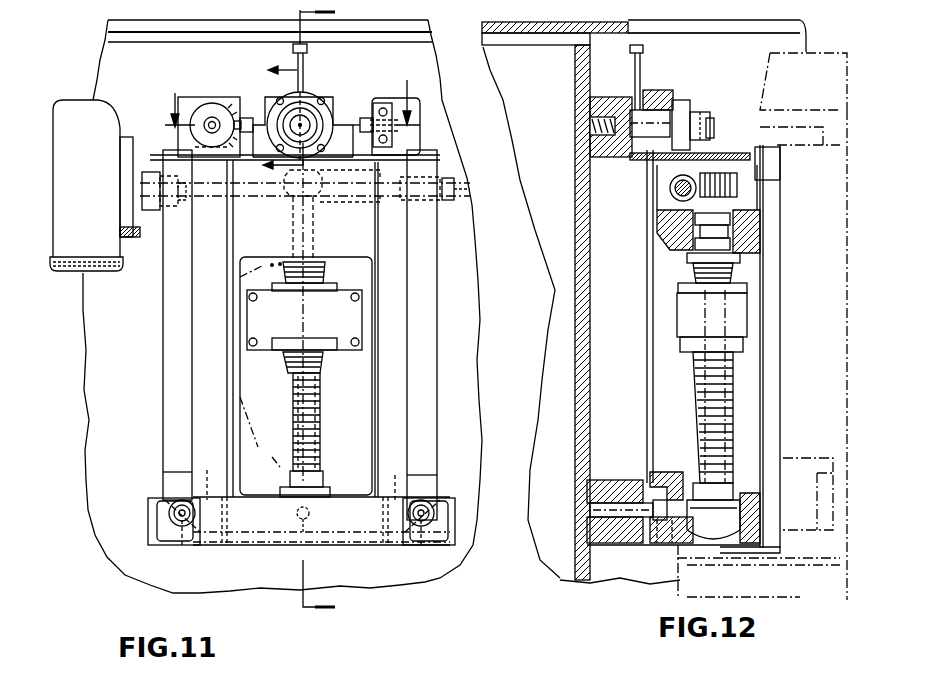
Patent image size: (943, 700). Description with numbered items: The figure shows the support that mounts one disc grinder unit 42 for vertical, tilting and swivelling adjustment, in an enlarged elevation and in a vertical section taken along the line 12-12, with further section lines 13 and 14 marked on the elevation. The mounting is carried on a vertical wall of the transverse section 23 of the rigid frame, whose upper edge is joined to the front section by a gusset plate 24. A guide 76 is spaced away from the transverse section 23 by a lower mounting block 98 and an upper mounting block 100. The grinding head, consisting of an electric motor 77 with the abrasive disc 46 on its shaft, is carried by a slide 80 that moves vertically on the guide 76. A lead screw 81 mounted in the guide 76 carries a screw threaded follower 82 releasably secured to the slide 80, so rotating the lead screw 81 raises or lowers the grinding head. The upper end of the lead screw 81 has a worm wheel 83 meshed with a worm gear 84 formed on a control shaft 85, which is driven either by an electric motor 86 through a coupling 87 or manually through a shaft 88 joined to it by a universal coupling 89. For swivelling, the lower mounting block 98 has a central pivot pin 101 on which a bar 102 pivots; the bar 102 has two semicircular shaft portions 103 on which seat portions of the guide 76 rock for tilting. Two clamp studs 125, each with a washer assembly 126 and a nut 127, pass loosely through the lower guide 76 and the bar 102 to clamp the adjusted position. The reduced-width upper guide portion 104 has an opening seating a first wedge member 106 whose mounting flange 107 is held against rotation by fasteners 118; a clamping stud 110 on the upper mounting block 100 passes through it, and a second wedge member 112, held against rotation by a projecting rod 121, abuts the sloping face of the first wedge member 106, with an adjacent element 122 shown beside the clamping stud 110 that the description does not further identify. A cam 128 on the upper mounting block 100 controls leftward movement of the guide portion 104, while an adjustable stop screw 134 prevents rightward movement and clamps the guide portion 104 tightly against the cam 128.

In FIG. 11, the gusset plate 24 is at (110, 26).
In FIG. 11, the electric motor 86 is at (70, 273).
In FIG. 11, the coupling 87 is at (178, 208).
In FIG. 11, the guide 76 is at (407, 367).
In FIG. 12, the guide 76 is at (657, 383).
In FIG. 11, the disc grinder unit 42 is at (140, 344).
In FIG. 12, the disc grinder unit 42 is at (790, 384).
In FIG. 11, the transverse section 23 is at (97, 438).
In FIG. 12, the transverse section 23 is at (592, 372).
In FIG. 11, the mounting block 100 is at (233, 100).
In FIG. 12, the mounting block 100 is at (610, 97).
In FIG. 11, the guide portion 104 is at (260, 117).
In FIG. 12, the guide portion 104 is at (667, 100).
In FIG. 11, the cam 128 is at (202, 106).
In FIG. 11, the mounting flange 107 is at (330, 113).
In FIG. 11, the fasteners 118 is at (327, 103).
In FIG. 11, the projecting rod 121 is at (307, 59).
In FIG. 12, the projecting rod 121 is at (641, 66).
In FIG. 11, the adjustable stop screw 134 is at (392, 127).
In FIG. 11, the universal coupling 89 is at (453, 163).
In FIG. 11, the worm wheel 83 is at (322, 200).
In FIG. 12, the worm wheel 83 is at (733, 188).
In FIG. 11, the shaft 88 is at (453, 202).
In FIG. 11, the control shaft 85 is at (256, 192).
In FIG. 12, the control shaft 85 is at (673, 200).
In FIG. 11, the screw threaded follower 82 is at (350, 314).
In FIG. 12, the screw threaded follower 82 is at (740, 313).
In FIG. 11, the lead screw 81 is at (320, 405).
In FIG. 12, the lead screw 81 is at (723, 447).
In FIG. 11, the mounting block 98 is at (462, 548).
In FIG. 12, the mounting block 98 is at (607, 483).
In FIG. 11, the bar 102 is at (363, 537).
In FIG. 12, the bar 102 is at (660, 487).
In FIG. 11, the pivot pin 101 is at (293, 537).
In FIG. 12, the pivot pin 101 is at (620, 543).
In FIG. 11, the shaft portions 103 is at (303, 476).
In FIG. 12, the shaft portions 103 is at (657, 533).
In FIG. 11, the washer assembly 126 is at (168, 497).
In FIG. 11, the nut 127 is at (170, 524).
In FIG. 11, the clamp studs 125 is at (183, 530).
In FIG. 11, the section line 12- 12 is at (335, 313).
In FIG. 11, the section line 13- 13 is at (271, 117).
In FIG. 11, the section line 14- 14 is at (287, 90).
In FIG. 12, the clamping stud 110 is at (590, 157).
In FIG. 12, the first wedge member 106 is at (680, 110).
In FIG. 12, the washer 122 is at (708, 143).
In FIG. 12, the second wedge member 112 is at (633, 152).
In FIG. 12, the electric motor 77 is at (795, 67).
In FIG. 12, the worm gear 84 is at (670, 190).
In FIG. 12, the slide 80 is at (770, 462).
In FIG. 12, the abrasive disc 46 is at (820, 587).